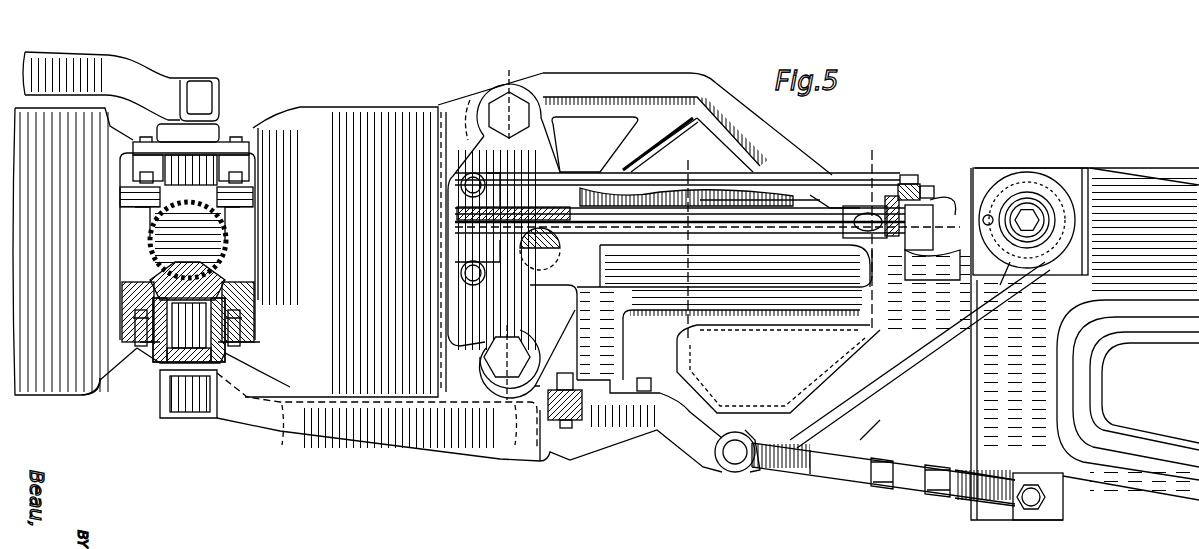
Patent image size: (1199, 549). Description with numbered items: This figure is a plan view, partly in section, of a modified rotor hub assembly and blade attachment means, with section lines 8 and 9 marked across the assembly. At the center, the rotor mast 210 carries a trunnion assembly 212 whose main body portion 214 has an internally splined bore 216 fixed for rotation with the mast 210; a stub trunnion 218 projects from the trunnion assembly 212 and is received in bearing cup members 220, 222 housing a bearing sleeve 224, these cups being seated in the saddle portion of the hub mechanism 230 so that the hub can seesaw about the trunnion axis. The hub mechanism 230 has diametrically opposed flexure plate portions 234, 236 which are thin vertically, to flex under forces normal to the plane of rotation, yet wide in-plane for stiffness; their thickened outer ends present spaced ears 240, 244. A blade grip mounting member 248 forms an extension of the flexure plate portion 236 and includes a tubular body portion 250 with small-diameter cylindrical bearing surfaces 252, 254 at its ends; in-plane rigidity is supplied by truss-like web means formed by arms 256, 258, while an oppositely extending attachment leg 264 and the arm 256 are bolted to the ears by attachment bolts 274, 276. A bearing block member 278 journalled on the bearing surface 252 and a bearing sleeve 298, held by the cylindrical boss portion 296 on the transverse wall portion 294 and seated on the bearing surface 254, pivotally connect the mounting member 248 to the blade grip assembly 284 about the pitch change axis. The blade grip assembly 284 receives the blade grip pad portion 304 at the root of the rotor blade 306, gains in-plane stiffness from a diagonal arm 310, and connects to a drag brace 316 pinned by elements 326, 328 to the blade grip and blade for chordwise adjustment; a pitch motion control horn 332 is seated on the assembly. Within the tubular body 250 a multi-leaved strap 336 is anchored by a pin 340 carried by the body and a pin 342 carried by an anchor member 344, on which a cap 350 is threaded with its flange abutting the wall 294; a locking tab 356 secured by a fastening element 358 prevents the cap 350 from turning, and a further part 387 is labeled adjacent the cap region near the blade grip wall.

The section line 8- 8 is at (705, 153).
The section line 9- 9 is at (880, 141).
The rotor mast 210 is at (198, 222).
The trunnion assembly 212 is at (247, 212).
The main body portion 214 is at (135, 272).
The internally splined bore 216 is at (218, 218).
The stub trunnion 218 is at (222, 316).
The bearing cup member 220 is at (166, 134).
The bearing cup member 222 is at (235, 353).
The bearing sleeve 224 is at (228, 332).
The hub mechanism 230 is at (342, 104).
The flexure plate portion 234 is at (88, 362).
The flexure plate portion 236 is at (364, 115).
The ear 240 is at (468, 110).
The ear 244 is at (498, 328).
The blade grip mounting member 248 is at (664, 72).
The tubular body portion 250 is at (735, 205).
The cylindrical bearing surface 252 is at (533, 220).
The cylindrical bearing surface 254 is at (822, 196).
The arm 256 is at (522, 198).
The arm 258 is at (742, 122).
The attachment leg 264 is at (604, 386).
The attachment bolt 274 is at (520, 96).
The attachment bolt 276 is at (500, 375).
The bearing block member 278 is at (452, 240).
The blade grip assembly 284 is at (872, 404).
The transverse wall portion 294 is at (903, 195).
The cylindrical boss portion 296 is at (882, 200).
The bearing sleeve 298 is at (848, 200).
The blade grip pad portion 304 is at (1065, 180).
The rotor blade 306 is at (1136, 165).
The diagonal arm 310 is at (834, 412).
The drag brace 316 is at (902, 495).
The pin element 326 is at (740, 458).
The pin element 328 is at (1040, 508).
The pitch motion control horn 332 is at (412, 452).
The multi-leaved strap 336 is at (715, 232).
The pin 340 is at (562, 249).
The pin 342 is at (840, 231).
The anchor member 344 is at (940, 238).
The cap 350 is at (934, 227).
The locking tab 356 is at (906, 190).
The fastening element 358 is at (940, 200).
The pin 387 is at (969, 208).